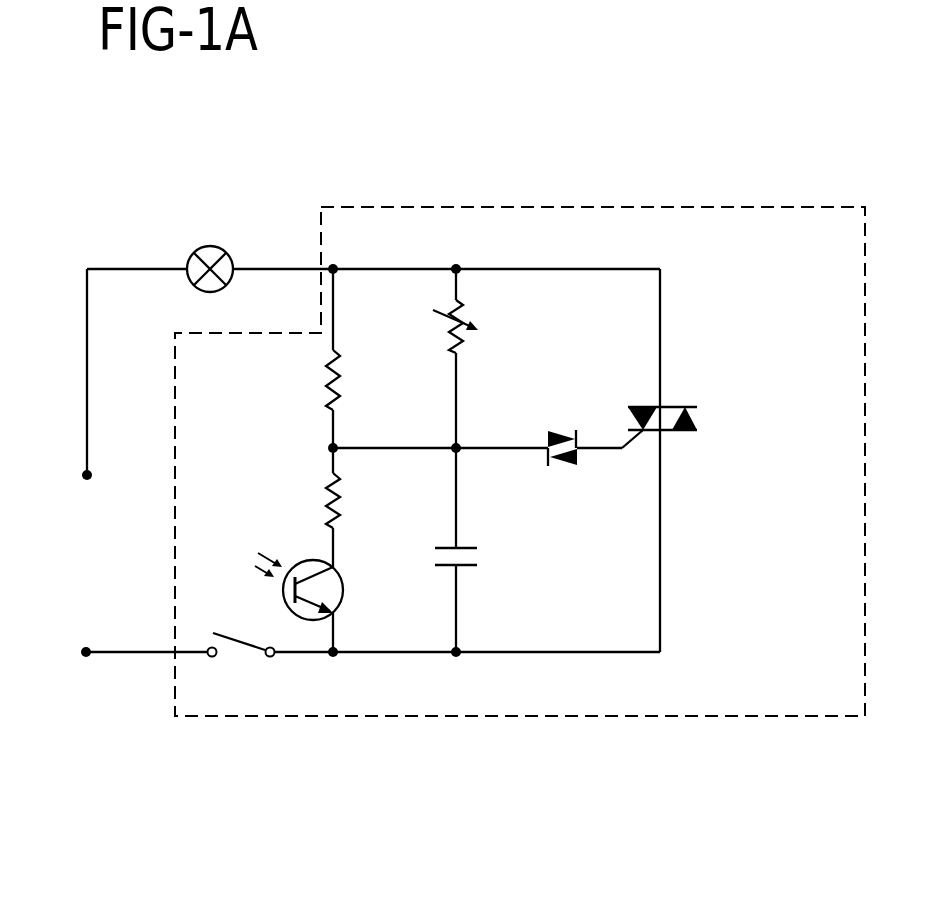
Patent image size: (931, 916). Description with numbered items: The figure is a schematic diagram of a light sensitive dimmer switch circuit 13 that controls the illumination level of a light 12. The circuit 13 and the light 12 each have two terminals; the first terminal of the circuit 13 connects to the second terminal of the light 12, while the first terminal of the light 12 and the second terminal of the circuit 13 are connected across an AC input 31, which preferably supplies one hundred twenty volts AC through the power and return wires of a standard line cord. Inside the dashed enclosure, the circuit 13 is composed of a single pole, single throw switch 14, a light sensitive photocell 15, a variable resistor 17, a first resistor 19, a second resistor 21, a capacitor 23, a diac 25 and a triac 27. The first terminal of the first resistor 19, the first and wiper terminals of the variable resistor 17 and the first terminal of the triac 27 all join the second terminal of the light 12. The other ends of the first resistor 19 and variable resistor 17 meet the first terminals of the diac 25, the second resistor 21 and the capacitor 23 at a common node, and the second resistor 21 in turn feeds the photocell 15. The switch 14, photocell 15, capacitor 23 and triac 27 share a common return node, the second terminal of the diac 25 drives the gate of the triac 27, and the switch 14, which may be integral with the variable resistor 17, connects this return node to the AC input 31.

The light 12 is at (234, 263).
The light sensitive dimmer switch circuit 13 is at (865, 627).
The single pole, single throw switch 14 is at (217, 657).
The light sensitive photocell 15 is at (344, 596).
The variable resistor 17 is at (462, 300).
The first resistor 19 is at (333, 382).
The second resistor 21 is at (323, 512).
The capacitor 23 is at (458, 547).
The diac 25 is at (577, 462).
The triac 27 is at (680, 433).
The AC input 31 is at (87, 528).